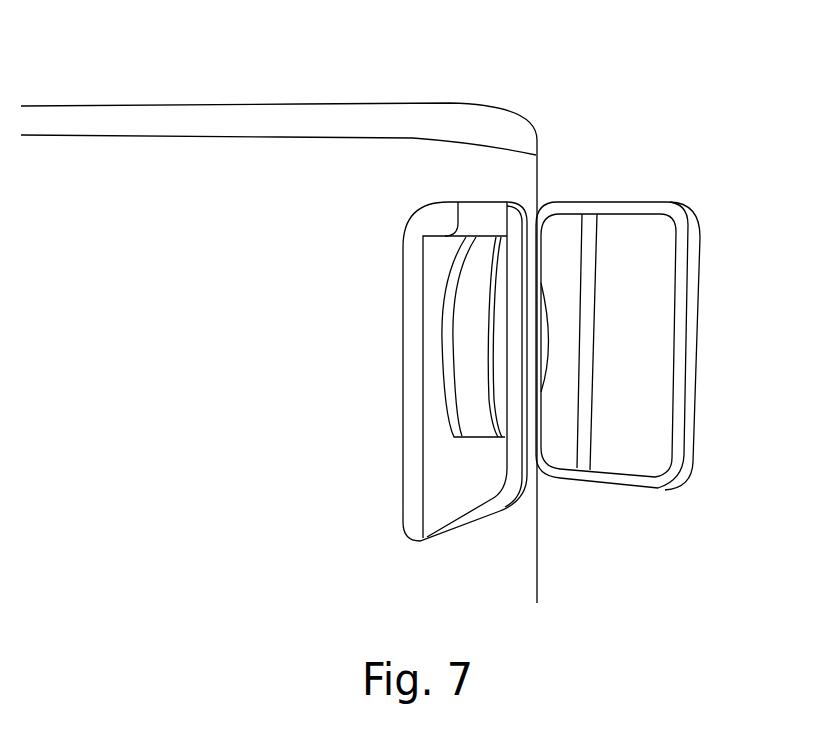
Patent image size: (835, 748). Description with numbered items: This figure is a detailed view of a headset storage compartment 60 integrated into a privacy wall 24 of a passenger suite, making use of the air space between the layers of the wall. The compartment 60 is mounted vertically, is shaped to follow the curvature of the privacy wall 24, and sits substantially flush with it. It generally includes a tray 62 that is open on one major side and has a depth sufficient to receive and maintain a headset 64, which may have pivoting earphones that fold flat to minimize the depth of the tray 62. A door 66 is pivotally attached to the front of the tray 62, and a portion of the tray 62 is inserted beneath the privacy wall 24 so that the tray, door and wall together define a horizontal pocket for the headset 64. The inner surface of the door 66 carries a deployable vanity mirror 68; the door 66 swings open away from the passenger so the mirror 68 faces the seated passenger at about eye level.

The privacy wall 24 is at (380, 170).
The headset storage compartment 60 is at (602, 295).
The tray 62 is at (453, 493).
The headset 64 is at (475, 417).
The door 66 is at (692, 270).
The deployable vanity mirror 68 is at (642, 373).